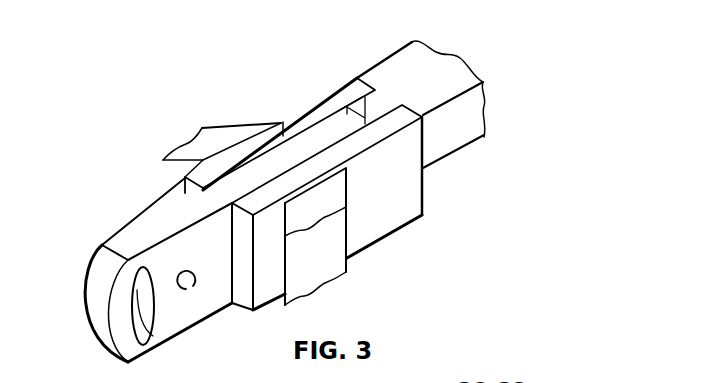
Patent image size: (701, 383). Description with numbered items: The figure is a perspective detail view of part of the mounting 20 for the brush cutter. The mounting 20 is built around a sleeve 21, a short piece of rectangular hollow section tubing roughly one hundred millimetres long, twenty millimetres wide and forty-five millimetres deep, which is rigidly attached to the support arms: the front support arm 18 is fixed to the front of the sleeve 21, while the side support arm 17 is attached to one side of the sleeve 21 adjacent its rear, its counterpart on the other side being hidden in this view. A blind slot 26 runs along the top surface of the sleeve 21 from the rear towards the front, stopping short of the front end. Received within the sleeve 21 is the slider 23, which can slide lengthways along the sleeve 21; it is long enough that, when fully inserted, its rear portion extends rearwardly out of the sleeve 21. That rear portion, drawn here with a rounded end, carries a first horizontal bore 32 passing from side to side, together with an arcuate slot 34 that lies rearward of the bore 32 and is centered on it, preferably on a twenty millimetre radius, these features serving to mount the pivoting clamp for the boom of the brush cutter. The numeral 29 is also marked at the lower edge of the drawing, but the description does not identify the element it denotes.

The side support arm 17 is at (333, 257).
The front support arm 18 is at (450, 73).
The mounting 20 is at (517, 97).
The sleeve 21 is at (402, 188).
The slider 23 is at (97, 350).
The slot 26 is at (285, 140).
The element 29 is at (436, 373).
The first horizontal bore 32 is at (191, 288).
The arcuate slot 34 is at (140, 295).